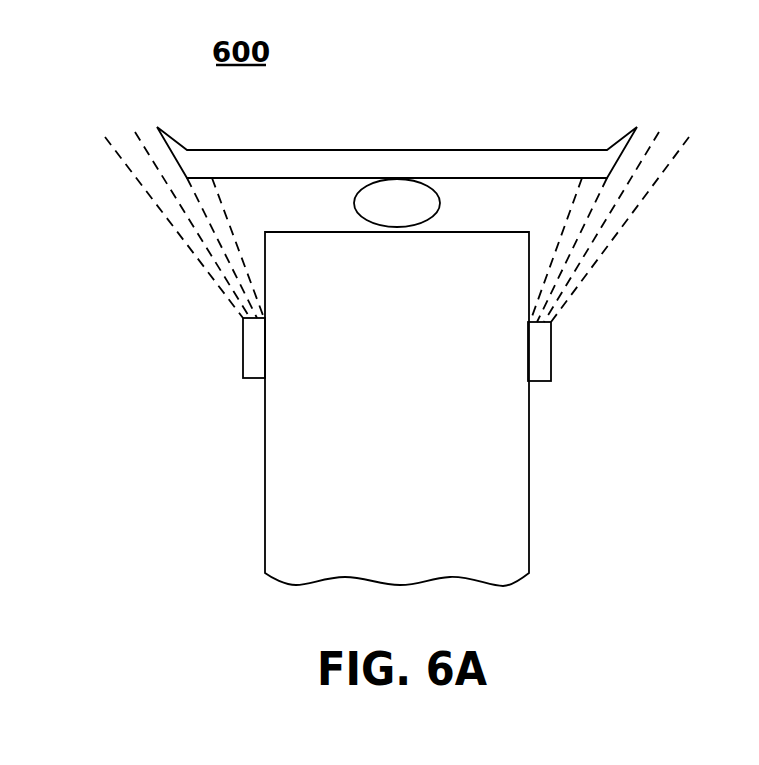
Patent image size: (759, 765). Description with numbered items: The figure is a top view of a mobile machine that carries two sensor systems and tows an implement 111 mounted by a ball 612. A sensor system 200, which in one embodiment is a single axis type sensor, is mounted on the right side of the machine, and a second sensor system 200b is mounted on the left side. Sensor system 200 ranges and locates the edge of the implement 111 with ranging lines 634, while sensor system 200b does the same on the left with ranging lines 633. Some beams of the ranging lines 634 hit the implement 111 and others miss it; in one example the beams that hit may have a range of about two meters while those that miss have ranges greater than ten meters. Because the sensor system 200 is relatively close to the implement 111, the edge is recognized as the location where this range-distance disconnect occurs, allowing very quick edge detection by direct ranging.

The implement 111 is at (425, 150).
The ball 612 is at (437, 197).
The sensor system 200 is at (551, 348).
The sensor system 200b is at (243, 355).
The ranging lines 633 is at (203, 271).
The ranging lines 634 is at (616, 224).